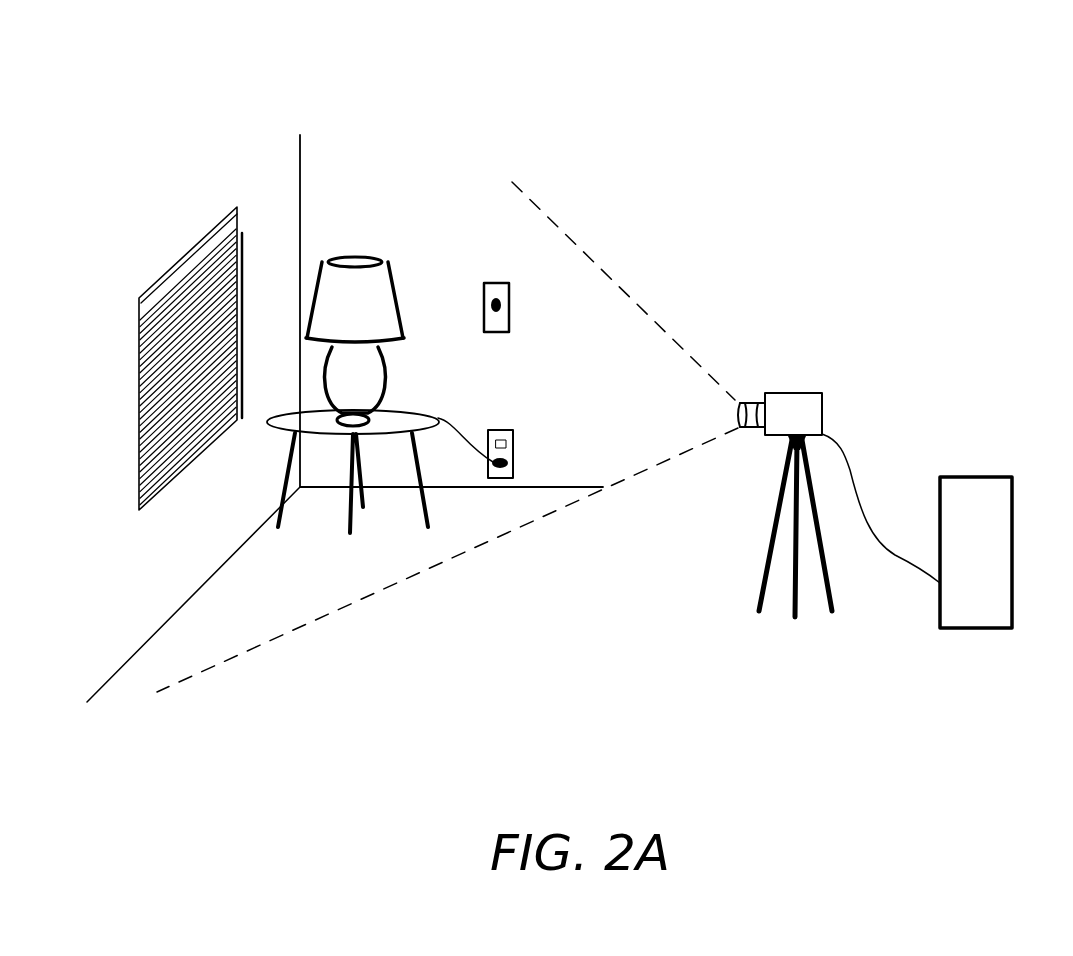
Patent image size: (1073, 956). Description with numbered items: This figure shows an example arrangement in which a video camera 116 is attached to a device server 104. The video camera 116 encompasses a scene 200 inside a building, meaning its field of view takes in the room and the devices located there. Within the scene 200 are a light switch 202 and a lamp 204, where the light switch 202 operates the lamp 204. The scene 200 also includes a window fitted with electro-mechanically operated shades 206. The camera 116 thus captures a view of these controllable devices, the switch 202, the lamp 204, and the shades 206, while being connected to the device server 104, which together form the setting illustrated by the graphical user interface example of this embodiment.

The scene 200 is at (695, 253).
The light switch 202 is at (502, 274).
The lamp 204 is at (357, 240).
The electro-mechanically operated shades 206 is at (218, 204).
The video camera 116 is at (781, 394).
The device server 104 is at (963, 482).